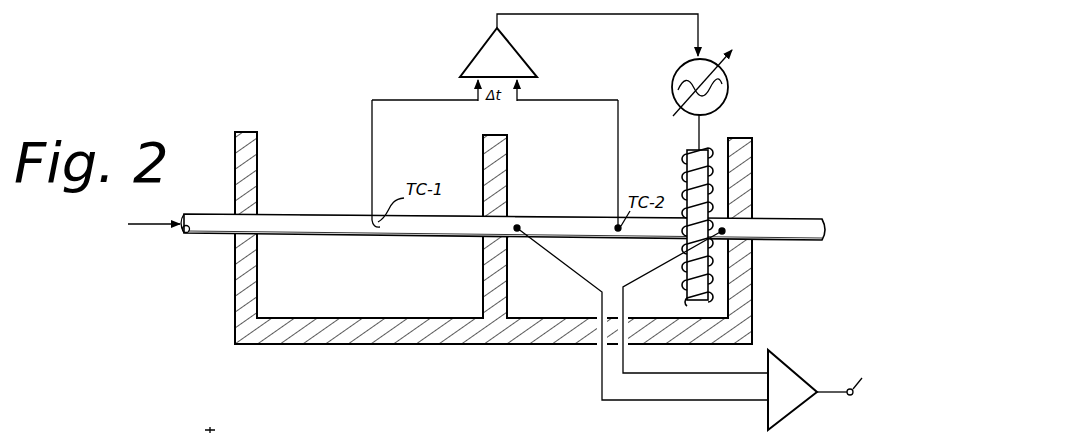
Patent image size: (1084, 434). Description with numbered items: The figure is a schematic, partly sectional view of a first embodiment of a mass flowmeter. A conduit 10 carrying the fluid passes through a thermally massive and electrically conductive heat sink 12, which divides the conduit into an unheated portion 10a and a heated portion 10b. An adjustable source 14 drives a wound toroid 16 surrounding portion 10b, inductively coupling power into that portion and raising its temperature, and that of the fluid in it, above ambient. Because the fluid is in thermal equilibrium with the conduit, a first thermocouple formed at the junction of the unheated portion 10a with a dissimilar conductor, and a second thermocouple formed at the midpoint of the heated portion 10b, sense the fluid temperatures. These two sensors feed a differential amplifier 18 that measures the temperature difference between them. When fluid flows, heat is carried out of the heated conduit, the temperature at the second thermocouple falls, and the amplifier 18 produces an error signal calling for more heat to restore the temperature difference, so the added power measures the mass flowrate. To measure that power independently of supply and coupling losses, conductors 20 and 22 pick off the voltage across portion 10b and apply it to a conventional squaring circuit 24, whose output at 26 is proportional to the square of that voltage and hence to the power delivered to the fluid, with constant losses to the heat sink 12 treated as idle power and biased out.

The conduit 10 is at (766, 211).
The unheated portion of the conduit 10a is at (448, 242).
The heated portion of the conduit 10b is at (590, 199).
The heat sink 12 is at (225, 283).
The adjustable source 14 is at (728, 70).
The wound toroid 16 is at (684, 162).
The differential amplifier 18 is at (520, 46).
The conductor 20 is at (655, 373).
The conductor 22 is at (601, 384).
The squaring circuit 24 is at (786, 358).
The output 26 is at (845, 388).